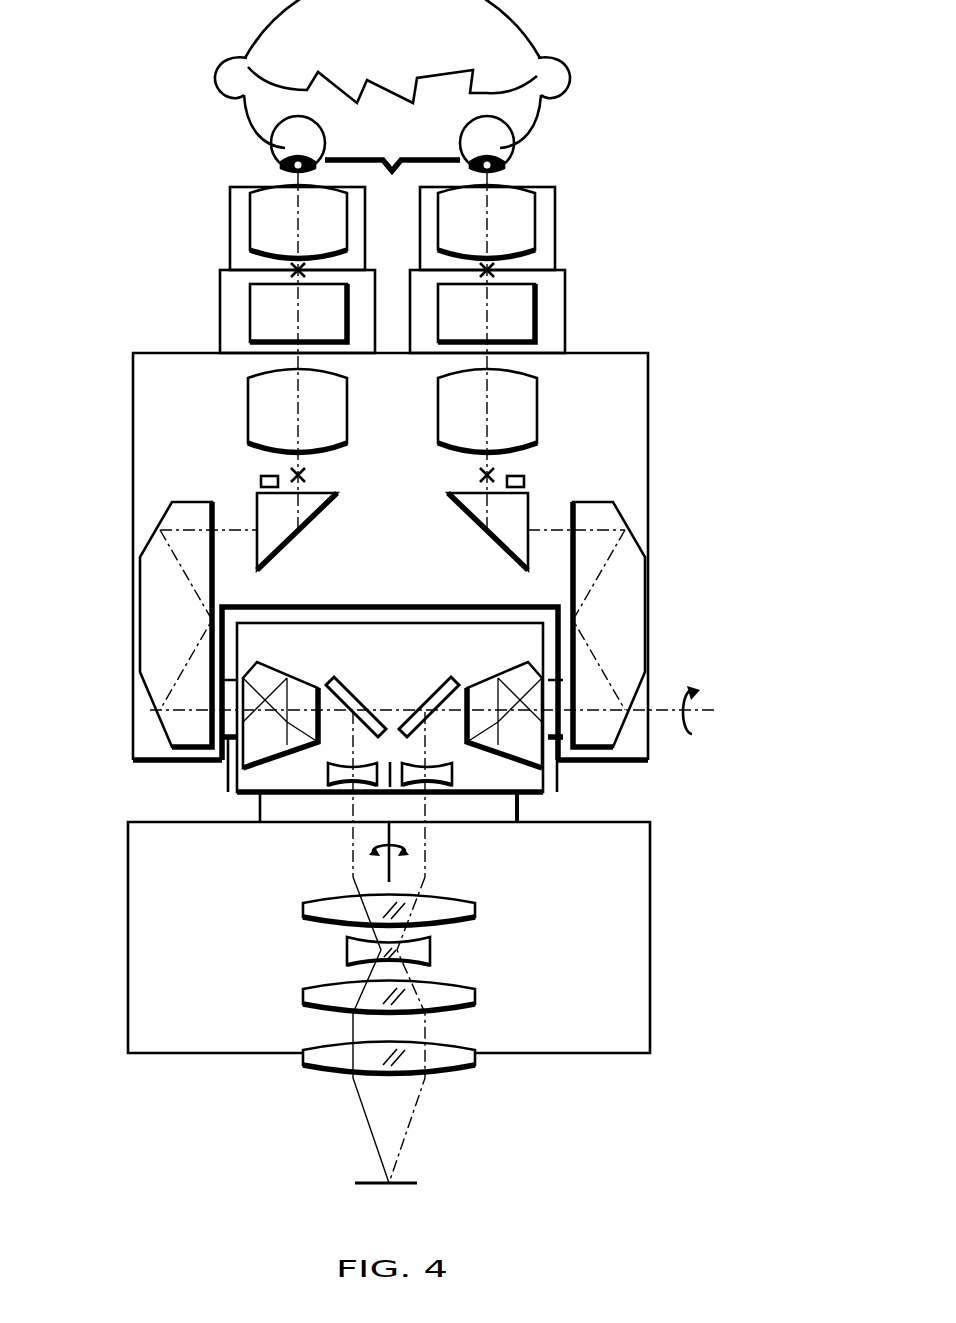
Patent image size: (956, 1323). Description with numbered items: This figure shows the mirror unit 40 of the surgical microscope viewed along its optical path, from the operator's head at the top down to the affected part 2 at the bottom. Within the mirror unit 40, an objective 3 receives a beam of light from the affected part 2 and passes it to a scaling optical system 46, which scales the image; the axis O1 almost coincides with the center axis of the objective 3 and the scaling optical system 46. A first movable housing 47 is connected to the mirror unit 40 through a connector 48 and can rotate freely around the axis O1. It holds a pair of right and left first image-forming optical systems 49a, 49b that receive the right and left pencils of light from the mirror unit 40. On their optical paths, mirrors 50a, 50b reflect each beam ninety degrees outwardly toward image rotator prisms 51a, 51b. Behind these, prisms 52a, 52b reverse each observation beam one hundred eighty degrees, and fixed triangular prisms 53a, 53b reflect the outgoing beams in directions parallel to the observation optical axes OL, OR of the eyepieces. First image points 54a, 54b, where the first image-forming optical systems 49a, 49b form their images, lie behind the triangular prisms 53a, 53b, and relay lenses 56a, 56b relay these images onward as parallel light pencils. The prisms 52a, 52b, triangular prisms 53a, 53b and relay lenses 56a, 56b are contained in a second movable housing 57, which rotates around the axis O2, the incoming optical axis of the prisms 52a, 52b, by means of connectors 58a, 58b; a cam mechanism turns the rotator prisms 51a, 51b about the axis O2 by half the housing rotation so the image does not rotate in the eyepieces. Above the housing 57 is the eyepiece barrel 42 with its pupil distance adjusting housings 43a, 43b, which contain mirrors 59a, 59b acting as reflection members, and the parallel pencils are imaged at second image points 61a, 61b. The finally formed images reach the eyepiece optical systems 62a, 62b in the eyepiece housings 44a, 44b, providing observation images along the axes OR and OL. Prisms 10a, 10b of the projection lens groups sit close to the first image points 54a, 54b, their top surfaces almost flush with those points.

The affected part 2 is at (412, 1180).
The objective 3 is at (455, 1073).
The prism 10a is at (262, 481).
The prism 10b is at (505, 481).
The mirror unit 40 is at (662, 975).
The eyepiece barrel 42 is at (672, 600).
The pupil distance adjusting housing 43a is at (220, 288).
The pupil distance adjusting housing 43b is at (565, 288).
The eyepiece housing 44a is at (230, 205).
The eyepiece housing 44b is at (555, 205).
The scaling optical system 46 is at (478, 892).
The first movable housing 47 is at (480, 645).
The connector 48 is at (520, 805).
The first image-forming optical system 49a is at (332, 774).
The first image-forming optical system 49b is at (448, 774).
The mirror 50a is at (368, 690).
The mirror 50b is at (420, 690).
The image rotator prism 51a is at (250, 765).
The image rotator prism 51b is at (535, 765).
The prism 52a is at (150, 657).
The prism 52b is at (610, 732).
The triangular prism 53a is at (265, 505).
The triangular prism 53b is at (515, 505).
The first image point 54a is at (293, 472).
The first image point 54b is at (492, 473).
The relay lens 56a is at (257, 398).
The relay lens 56b is at (530, 398).
The second movable housing 57 is at (648, 525).
The connector 58a is at (227, 760).
The connector 58b is at (552, 750).
The mirror 59a is at (258, 322).
The mirror 59b is at (527, 322).
The second image point 61a is at (290, 264).
The second image point 61b is at (495, 264).
The eyepiece optical system 62a is at (272, 186).
The eyepiece optical system 62b is at (513, 186).
The observation optical axis OR is at (300, 206).
The observation optical axis OL is at (486, 226).
The axis O1 is at (392, 870).
The axis O2 is at (448, 710).